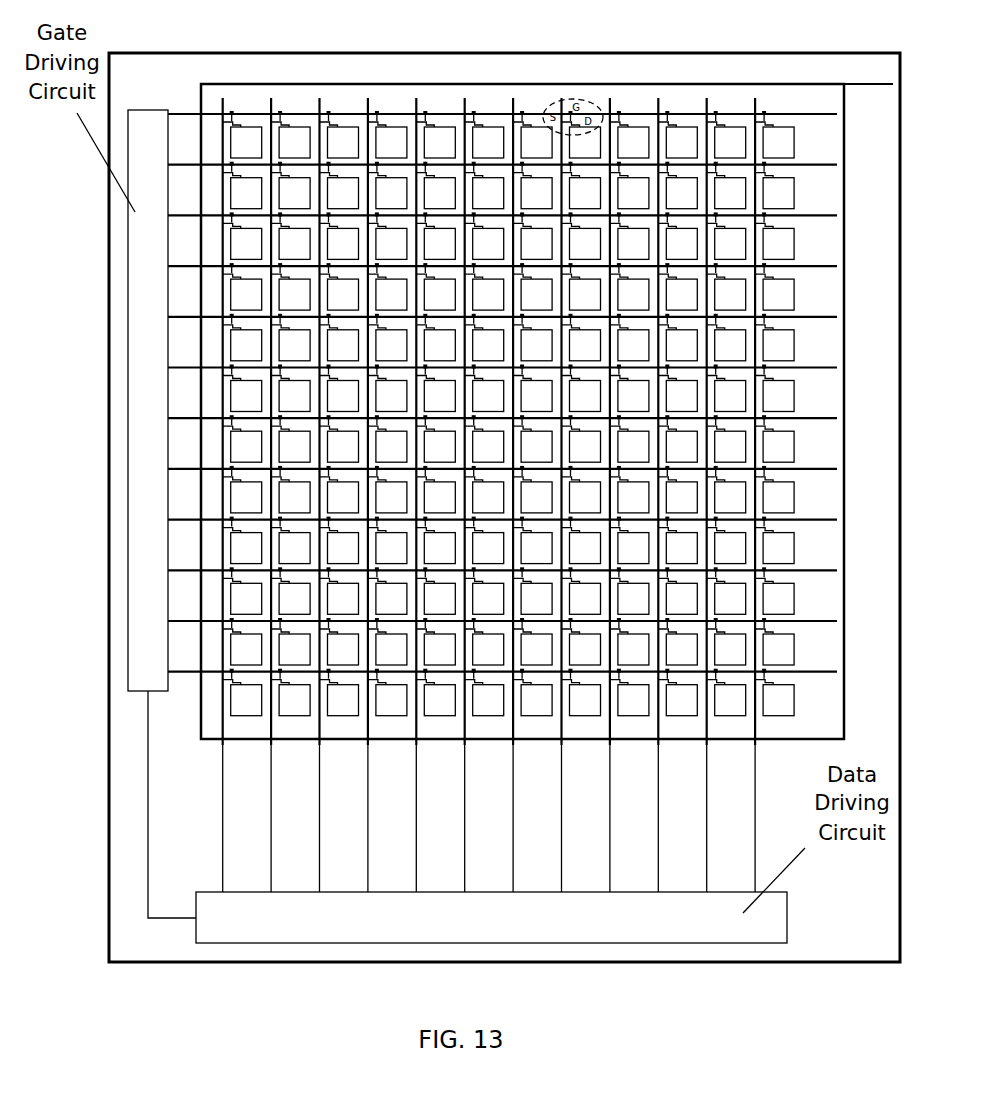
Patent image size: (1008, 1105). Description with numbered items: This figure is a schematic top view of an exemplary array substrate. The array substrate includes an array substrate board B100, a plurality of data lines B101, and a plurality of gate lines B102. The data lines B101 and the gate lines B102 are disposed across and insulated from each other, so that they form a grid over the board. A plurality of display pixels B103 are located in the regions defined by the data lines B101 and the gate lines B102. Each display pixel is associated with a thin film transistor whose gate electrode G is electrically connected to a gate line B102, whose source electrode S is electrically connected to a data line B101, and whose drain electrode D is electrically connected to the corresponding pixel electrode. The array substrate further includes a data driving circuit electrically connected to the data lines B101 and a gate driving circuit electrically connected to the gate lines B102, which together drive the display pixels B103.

The array substrate board B100 is at (547, 400).
The data lines B101 is at (363, 108).
The gate lines B102 is at (258, 114).
The display pixels B103 is at (398, 128).